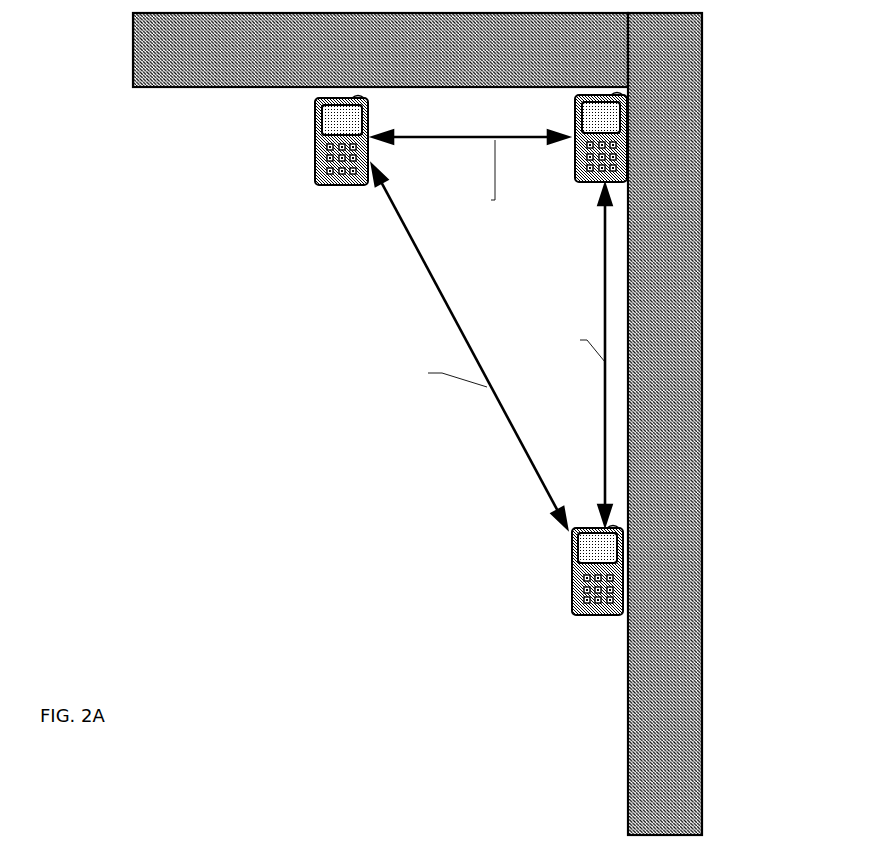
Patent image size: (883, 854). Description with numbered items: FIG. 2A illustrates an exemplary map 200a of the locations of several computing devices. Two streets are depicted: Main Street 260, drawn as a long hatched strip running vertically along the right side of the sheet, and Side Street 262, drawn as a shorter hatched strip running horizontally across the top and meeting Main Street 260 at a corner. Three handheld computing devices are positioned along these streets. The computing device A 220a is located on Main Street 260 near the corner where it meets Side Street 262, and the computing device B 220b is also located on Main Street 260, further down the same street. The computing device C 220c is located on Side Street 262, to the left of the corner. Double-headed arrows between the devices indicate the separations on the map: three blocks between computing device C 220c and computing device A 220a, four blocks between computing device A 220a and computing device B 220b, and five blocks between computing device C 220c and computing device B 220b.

The example environment / map 200a is at (462, 424).
The Side Street 262 is at (349, 94).
The Main Street 260 is at (628, 787).
The computing device A 220a is at (534, 194).
The computing device B 220b is at (501, 577).
The computing device C 220c is at (267, 187).